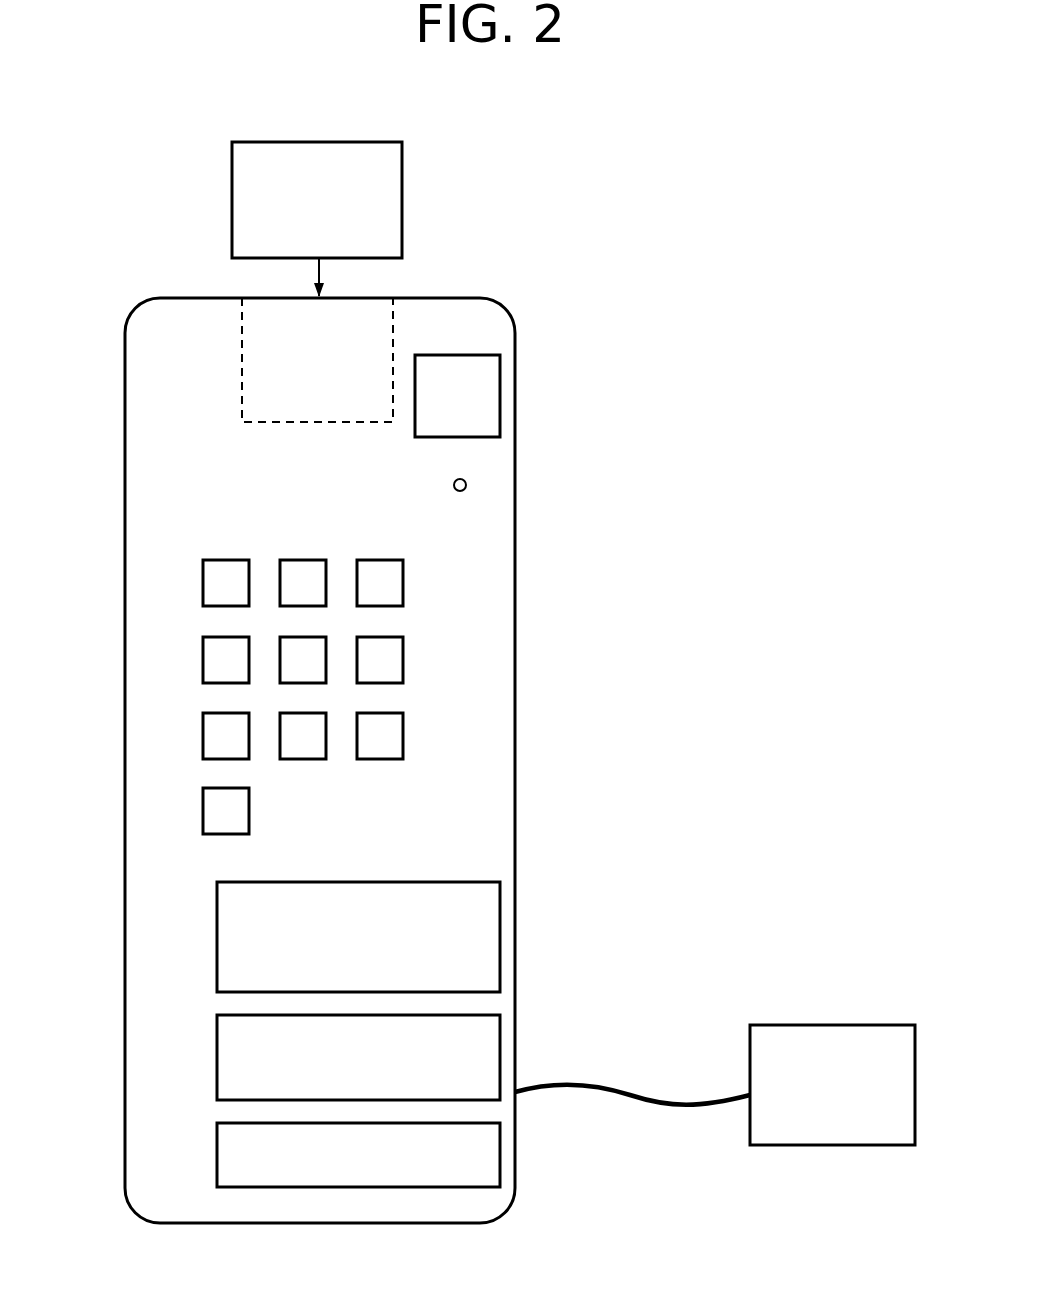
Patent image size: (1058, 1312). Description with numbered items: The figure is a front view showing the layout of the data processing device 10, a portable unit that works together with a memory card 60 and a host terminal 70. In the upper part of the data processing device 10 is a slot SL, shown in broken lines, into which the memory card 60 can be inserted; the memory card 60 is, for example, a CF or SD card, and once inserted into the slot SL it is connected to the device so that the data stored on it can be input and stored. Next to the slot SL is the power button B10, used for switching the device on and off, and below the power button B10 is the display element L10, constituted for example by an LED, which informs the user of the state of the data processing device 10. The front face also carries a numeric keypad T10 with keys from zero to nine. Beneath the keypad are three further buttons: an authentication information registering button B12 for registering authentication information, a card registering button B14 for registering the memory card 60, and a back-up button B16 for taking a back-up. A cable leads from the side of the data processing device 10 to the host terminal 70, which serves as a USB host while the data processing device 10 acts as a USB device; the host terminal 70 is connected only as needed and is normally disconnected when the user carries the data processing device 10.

The data processing device 10 is at (600, 437).
The memory card 60 is at (402, 158).
The slot SL is at (394, 322).
The power button B10 is at (500, 380).
The display element L10 is at (467, 485).
The numeric keypad T10 is at (183, 598).
The authentication information registering button B12 is at (500, 893).
The card registering button B14 is at (500, 1027).
The back-up button B16 is at (500, 1143).
The host terminal 70 is at (848, 1025).